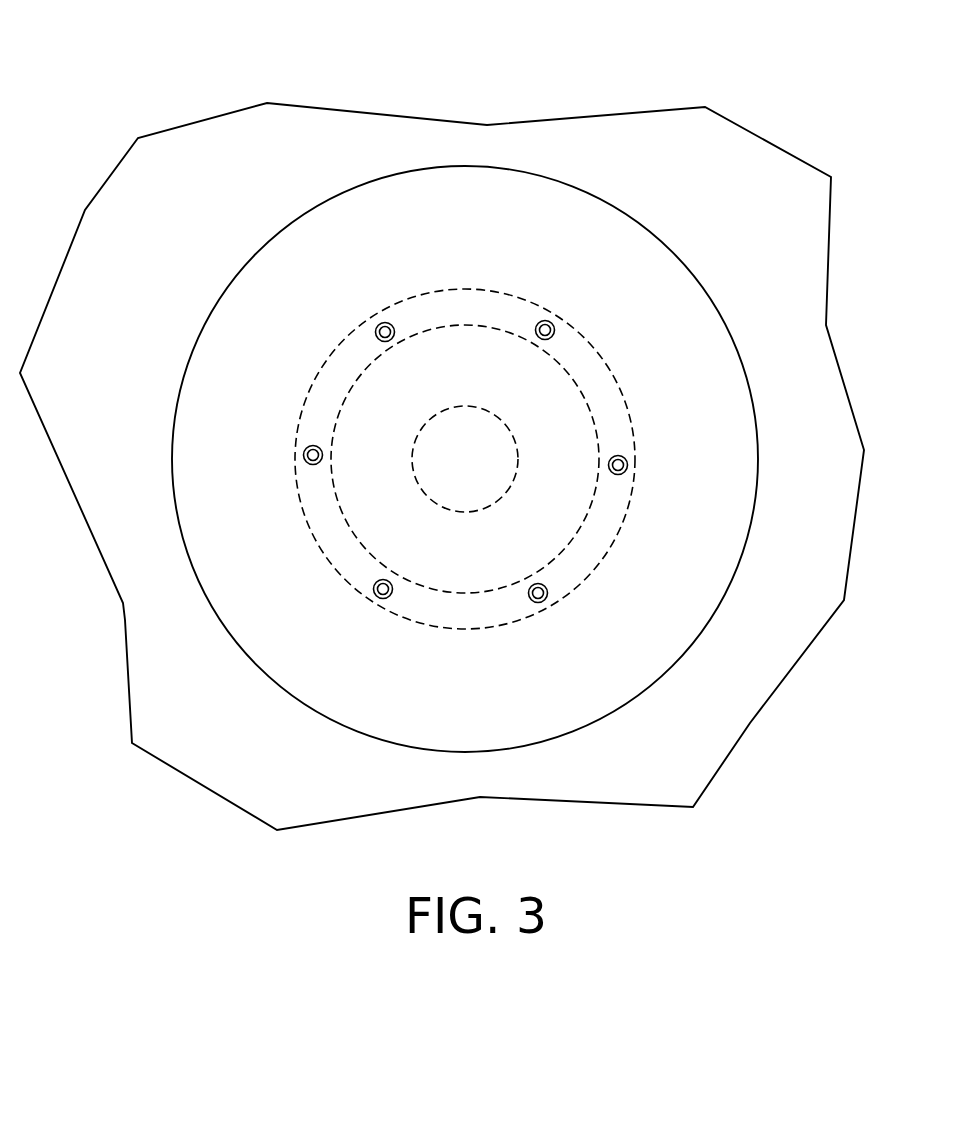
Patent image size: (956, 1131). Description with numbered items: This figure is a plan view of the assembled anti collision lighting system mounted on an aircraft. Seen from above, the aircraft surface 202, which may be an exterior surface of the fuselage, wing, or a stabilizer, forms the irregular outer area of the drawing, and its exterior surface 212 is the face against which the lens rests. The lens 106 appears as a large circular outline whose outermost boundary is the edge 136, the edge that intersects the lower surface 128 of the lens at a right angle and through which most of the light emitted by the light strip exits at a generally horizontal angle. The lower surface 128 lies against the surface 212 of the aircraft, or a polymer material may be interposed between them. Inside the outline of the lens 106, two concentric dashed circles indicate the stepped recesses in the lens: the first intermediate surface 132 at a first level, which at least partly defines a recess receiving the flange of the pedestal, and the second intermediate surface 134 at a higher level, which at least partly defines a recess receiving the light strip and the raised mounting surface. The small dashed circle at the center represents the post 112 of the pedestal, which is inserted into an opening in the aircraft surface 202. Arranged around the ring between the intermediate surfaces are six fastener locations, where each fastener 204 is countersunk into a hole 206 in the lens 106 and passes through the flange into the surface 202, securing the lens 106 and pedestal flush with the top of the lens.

The lens 106 is at (421, 459).
The post 112 is at (506, 492).
The lower surface 128 is at (598, 220).
The first intermediate surface 132 is at (602, 395).
The second intermediate surface 134 is at (542, 373).
The edge 136 is at (421, 459).
The aircraft surface 202 is at (442, 435).
The fastener 204 is at (302, 455).
The hole 206 is at (377, 323).
The surface 212 is at (681, 137).